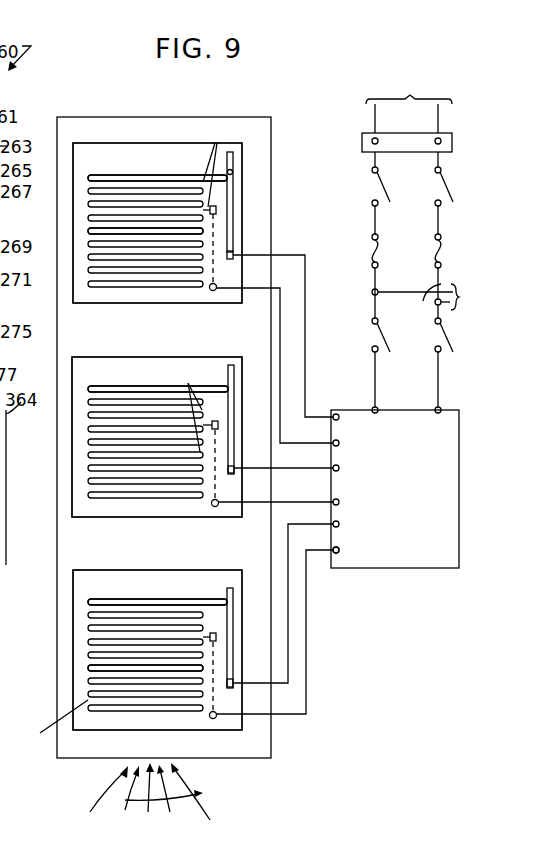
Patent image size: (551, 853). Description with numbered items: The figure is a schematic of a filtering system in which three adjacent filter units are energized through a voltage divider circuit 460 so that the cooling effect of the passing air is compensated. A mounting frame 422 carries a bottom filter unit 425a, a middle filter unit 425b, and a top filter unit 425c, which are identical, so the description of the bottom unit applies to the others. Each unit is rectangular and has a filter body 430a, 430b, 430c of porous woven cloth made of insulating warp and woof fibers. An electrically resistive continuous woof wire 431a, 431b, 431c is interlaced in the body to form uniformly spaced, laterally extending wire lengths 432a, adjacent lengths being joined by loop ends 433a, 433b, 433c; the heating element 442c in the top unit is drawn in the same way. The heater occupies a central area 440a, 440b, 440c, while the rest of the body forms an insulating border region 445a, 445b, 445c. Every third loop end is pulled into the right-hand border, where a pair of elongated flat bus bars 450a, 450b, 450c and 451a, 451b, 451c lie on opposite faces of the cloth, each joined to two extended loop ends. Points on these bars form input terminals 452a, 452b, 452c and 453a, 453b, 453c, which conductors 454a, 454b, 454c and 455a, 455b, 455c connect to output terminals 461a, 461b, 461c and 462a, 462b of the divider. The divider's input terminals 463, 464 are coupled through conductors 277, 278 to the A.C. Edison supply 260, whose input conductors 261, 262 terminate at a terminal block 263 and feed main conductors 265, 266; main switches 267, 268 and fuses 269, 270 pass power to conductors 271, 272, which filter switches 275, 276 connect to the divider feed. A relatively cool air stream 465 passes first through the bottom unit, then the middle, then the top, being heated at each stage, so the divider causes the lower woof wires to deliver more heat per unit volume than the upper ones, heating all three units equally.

The mounting frame 422 is at (156, 118).
The top filter unit 425c is at (89, 136).
The middle filter unit 425b is at (144, 354).
The bottom filter unit 425a is at (137, 548).
The filter body 430c is at (96, 142).
The filter body 430b is at (100, 357).
The filter body 430a is at (124, 569).
The central area 440c is at (205, 218).
The central area 440b is at (92, 437).
The central area 440a is at (183, 635).
The woof wire 431c is at (152, 158).
The woof wire 431b is at (154, 378).
The woof wire 431a is at (146, 598).
The heating element section 442c is at (125, 232).
The wire lengths 432a is at (115, 672).
The loop ends 433c is at (209, 166).
The loop ends 433b is at (181, 408).
The loop ends 433a is at (44, 718).
The bus bar 450c is at (234, 153).
The bus bar 450b is at (231, 368).
The bus bar 450a is at (233, 652).
The bus bar 451c is at (236, 165).
The bus bar 451b is at (214, 420).
The bus bar 451a is at (213, 645).
The insulating border region 445c is at (216, 207).
The insulating border region 445b is at (118, 512).
The insulating border region 445a is at (90, 648).
The input terminal 452c is at (236, 253).
The input terminal 452b is at (231, 470).
The input terminal 452a is at (236, 684).
The input terminal 453c is at (217, 285).
The input terminal 453b is at (215, 503).
The input terminal 453a is at (218, 717).
The conductor 454c is at (305, 263).
The conductor 455c is at (280, 310).
The conductor 455b is at (280, 455).
The conductor 454b is at (265, 506).
The conductor 454a is at (288, 651).
The conductor 455a is at (306, 681).
The output terminal 461c is at (345, 400).
The output terminal 461b is at (335, 500).
The output terminal 461a is at (338, 524).
The output terminal 462b is at (345, 459).
The output terminal 462a is at (343, 561).
The input terminal 463 is at (377, 413).
The input terminal 464 is at (437, 407).
The voltage divider circuit 460 is at (443, 562).
The air stream 465 is at (172, 791).
The A.C. Edison supply 260 is at (410, 56).
The input conductor 261 is at (438, 110).
The input conductor 262 is at (375, 110).
The terminal block 263 is at (363, 140).
The main conductor 265 is at (435, 170).
The main conductor 266 is at (372, 170).
The main switch 267 is at (435, 203).
The main switch 268 is at (372, 203).
The fuse 269 is at (436, 241).
The fuse 270 is at (377, 240).
The conductor 271 is at (436, 305).
The conductor 272 is at (378, 287).
The filter switch 275 is at (442, 342).
The filter switch 276 is at (372, 342).
The conductor 277 is at (438, 358).
The conductor 278 is at (375, 358).